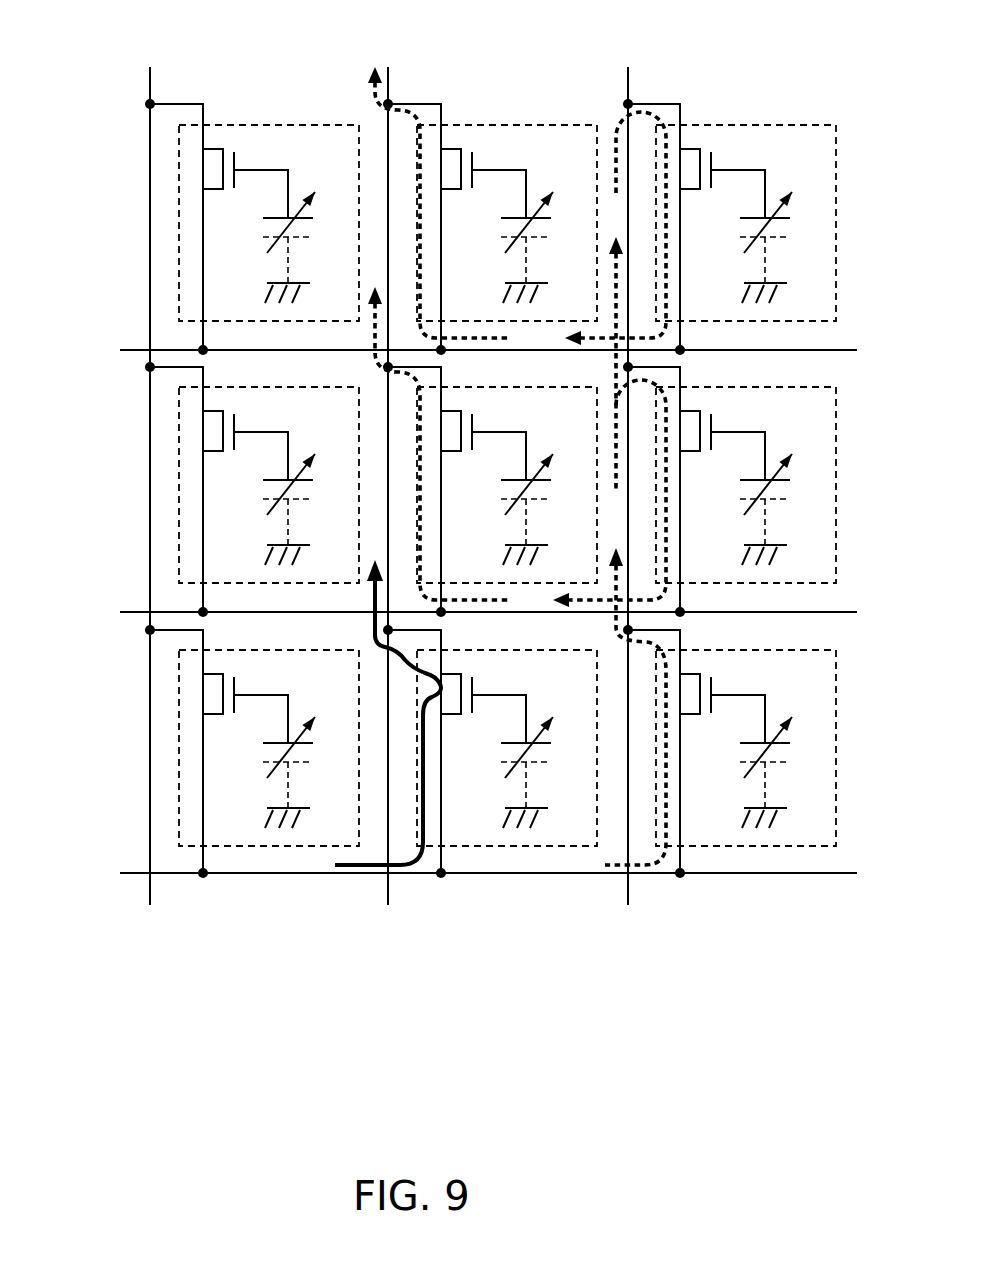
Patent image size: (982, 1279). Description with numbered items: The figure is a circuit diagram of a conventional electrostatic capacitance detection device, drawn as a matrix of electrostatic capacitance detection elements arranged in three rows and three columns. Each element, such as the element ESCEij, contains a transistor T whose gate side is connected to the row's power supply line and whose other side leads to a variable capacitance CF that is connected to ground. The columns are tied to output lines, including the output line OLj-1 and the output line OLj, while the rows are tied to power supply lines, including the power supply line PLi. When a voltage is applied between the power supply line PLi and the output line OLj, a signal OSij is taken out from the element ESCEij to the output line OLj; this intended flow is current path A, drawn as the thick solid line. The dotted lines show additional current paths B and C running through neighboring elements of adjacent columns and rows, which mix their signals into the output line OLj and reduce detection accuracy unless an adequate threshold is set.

The output line OLj-1 is at (160, 460).
The output line OLj is at (388, 460).
The power supply line PLi is at (447, 867).
The electrostatic capacitance detection element ESCEij is at (507, 748).
The transistor T is at (484, 446).
The variable capacitance CF is at (540, 510).
The signal OSij is at (407, 876).